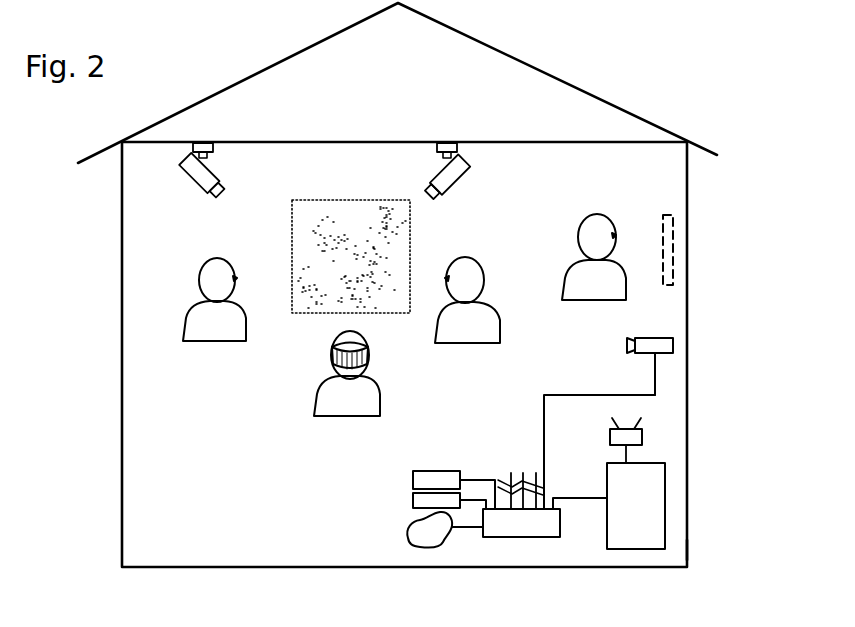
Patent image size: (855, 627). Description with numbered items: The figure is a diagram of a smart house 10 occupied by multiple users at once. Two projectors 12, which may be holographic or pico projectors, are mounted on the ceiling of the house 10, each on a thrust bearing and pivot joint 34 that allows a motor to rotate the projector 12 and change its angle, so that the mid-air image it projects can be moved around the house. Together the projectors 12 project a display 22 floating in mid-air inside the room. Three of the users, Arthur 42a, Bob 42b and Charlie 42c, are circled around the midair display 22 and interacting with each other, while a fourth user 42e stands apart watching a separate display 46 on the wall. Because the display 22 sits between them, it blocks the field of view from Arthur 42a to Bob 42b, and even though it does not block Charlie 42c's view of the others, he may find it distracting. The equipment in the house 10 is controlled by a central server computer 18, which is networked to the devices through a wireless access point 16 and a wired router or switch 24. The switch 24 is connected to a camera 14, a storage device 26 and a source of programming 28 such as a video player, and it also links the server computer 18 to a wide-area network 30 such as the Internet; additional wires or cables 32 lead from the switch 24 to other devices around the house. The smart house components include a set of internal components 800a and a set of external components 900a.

The smart house 10 is at (560, 78).
The projector 12 is at (191, 169).
The camera 14 is at (666, 347).
The wireless access point 16 is at (635, 440).
The central server computer 18 is at (645, 507).
The display 22 is at (295, 226).
The wired router or switch 24 is at (522, 523).
The storage device 26 is at (421, 480).
The source of programming 28 is at (418, 502).
The wide-area network 30 is at (420, 530).
The wires or cables 32 is at (524, 468).
The thrust bearing and pivot joint 34 is at (192, 144).
The user Arthur 42a is at (207, 325).
The user Bob 42b is at (487, 330).
The user Charlie 42c is at (332, 393).
The person 42e is at (573, 275).
The display 46 is at (675, 262).
The internal components 800a is at (750, 560).
The external components 900a is at (764, 573).